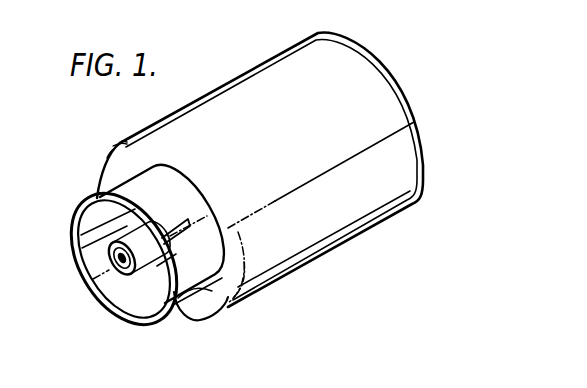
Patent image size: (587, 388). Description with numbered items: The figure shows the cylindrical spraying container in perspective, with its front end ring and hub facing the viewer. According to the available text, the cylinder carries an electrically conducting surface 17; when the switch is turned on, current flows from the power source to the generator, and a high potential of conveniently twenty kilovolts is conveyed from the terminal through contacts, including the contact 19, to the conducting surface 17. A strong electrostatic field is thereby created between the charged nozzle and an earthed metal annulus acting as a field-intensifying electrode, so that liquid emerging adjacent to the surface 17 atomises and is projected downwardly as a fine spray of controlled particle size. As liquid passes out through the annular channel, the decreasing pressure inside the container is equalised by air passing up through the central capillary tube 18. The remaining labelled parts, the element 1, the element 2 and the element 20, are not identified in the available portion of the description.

The drug delivery device / assembly 1 is at (232, 87).
The cylindrical housing body 2 is at (210, 238).
The electrically conducting surface 17 is at (82, 257).
The central capillary tube 18 is at (227, 300).
The contact 19 is at (191, 313).
The key tab 20 is at (180, 219).